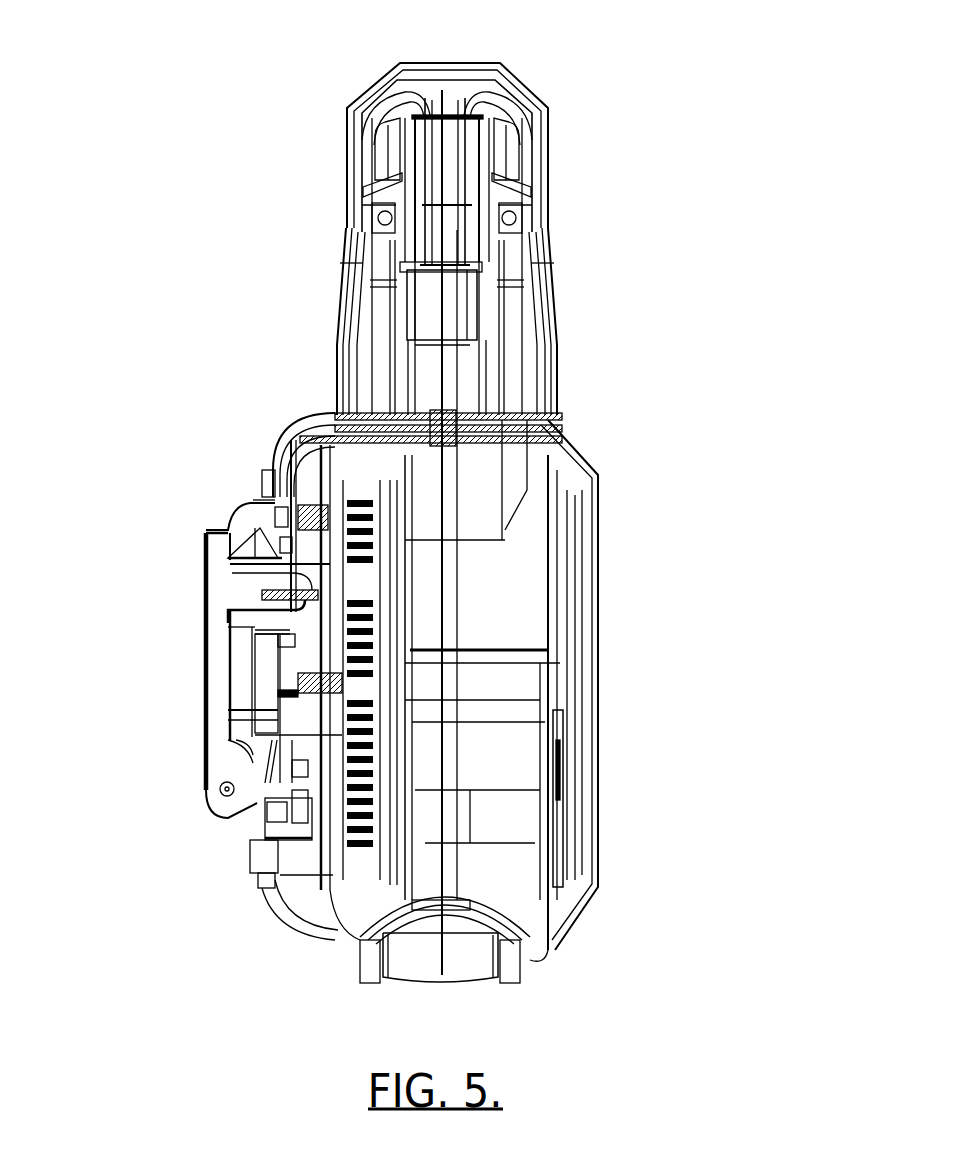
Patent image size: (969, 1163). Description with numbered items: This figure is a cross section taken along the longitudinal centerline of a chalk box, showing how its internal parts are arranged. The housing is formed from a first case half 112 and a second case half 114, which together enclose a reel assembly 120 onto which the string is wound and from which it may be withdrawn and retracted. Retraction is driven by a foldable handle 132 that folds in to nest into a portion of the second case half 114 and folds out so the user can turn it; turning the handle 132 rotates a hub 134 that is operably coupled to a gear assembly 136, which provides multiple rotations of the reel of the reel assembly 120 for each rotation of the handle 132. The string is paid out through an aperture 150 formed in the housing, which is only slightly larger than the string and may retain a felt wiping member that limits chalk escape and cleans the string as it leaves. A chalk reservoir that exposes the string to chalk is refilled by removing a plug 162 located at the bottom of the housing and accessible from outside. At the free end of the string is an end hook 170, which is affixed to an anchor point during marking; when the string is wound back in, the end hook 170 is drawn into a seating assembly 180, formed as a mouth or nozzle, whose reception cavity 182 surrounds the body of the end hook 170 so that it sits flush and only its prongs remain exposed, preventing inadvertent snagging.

The first case half 112 is at (578, 893).
The second case half 114 is at (352, 930).
The reel assembly 120 is at (562, 752).
The foldable handle 132 is at (225, 618).
The hub 134 is at (262, 836).
The gear assembly 136 is at (345, 833).
The aperture 150 is at (453, 345).
The plug 162 is at (458, 948).
The end hook 170 is at (425, 90).
The seating assembly 180 is at (518, 135).
The reception cavity 182 is at (562, 164).